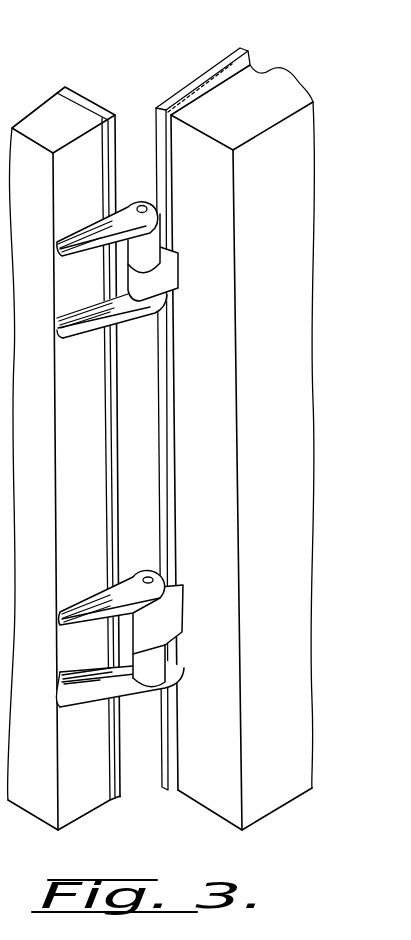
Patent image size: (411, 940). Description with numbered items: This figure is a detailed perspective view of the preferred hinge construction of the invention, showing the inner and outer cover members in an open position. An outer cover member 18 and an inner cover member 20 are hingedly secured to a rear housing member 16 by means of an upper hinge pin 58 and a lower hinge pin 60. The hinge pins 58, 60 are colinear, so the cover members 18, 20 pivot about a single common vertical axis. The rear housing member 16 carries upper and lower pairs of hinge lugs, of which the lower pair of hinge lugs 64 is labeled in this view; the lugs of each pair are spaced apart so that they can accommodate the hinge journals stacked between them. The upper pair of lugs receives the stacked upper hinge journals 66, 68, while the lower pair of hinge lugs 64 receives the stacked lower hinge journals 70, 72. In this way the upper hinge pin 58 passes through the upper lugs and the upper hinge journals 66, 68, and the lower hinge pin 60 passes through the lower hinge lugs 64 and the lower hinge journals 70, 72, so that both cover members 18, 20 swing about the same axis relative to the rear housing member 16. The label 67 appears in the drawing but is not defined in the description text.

The rear housing member 16 is at (40, 114).
The outer cover member 18 is at (265, 74).
The inner cover member 20 is at (232, 58).
The upper hinge pin 58 is at (141, 205).
The lower hinge pin 60 is at (147, 577).
The lower pair of hinge lugs 64 is at (162, 684).
The upper hinge journal 66 is at (150, 240).
The upper hinge leaves 67 is at (158, 312).
The upper hinge journal 68 is at (166, 272).
The lower hinge journal 70 is at (168, 610).
The lower hinge journal 72 is at (155, 658).